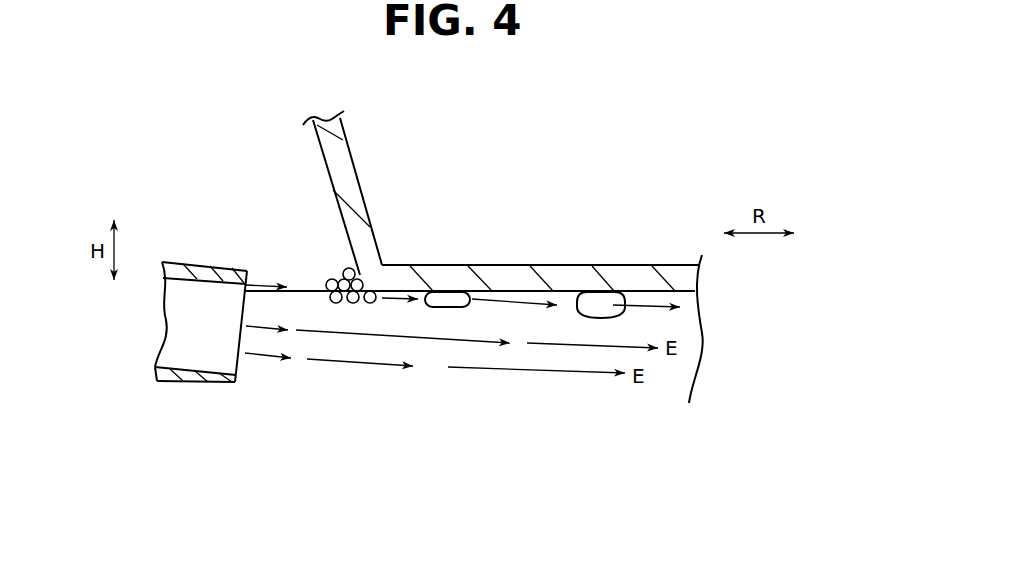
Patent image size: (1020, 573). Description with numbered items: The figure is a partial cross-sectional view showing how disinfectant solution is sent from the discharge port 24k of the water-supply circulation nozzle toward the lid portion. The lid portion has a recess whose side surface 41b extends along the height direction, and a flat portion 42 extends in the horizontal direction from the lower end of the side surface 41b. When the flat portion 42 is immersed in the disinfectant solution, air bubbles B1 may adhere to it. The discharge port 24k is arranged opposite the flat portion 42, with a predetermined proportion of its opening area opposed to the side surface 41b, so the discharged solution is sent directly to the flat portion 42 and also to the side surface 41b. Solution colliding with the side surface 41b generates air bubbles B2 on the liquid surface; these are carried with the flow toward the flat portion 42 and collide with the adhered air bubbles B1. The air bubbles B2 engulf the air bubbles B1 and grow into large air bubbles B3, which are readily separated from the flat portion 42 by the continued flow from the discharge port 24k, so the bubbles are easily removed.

The side surface 41b is at (320, 162).
The flat portion 42 is at (567, 294).
The discharge port 24k is at (240, 367).
The air bubbles B2 is at (336, 268).
The air bubbles B1 is at (449, 299).
The large air bubbles B3 is at (600, 300).